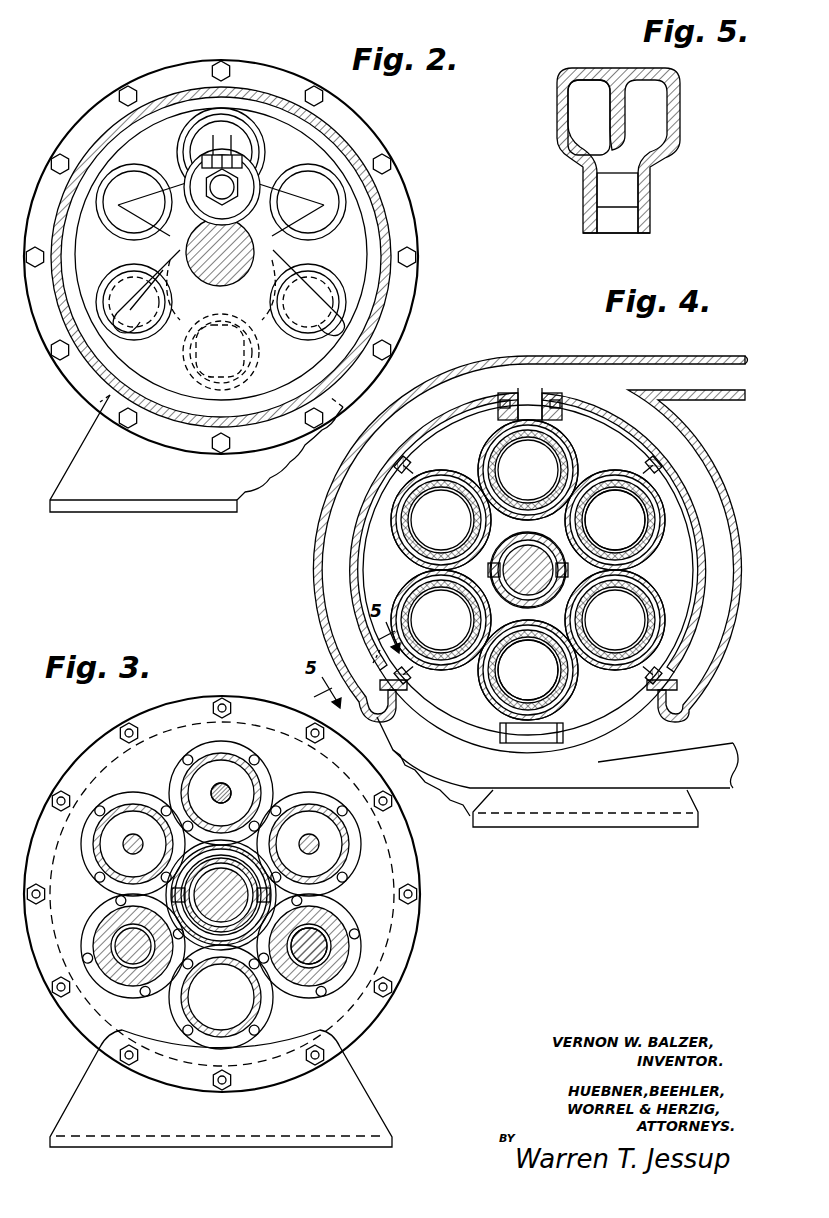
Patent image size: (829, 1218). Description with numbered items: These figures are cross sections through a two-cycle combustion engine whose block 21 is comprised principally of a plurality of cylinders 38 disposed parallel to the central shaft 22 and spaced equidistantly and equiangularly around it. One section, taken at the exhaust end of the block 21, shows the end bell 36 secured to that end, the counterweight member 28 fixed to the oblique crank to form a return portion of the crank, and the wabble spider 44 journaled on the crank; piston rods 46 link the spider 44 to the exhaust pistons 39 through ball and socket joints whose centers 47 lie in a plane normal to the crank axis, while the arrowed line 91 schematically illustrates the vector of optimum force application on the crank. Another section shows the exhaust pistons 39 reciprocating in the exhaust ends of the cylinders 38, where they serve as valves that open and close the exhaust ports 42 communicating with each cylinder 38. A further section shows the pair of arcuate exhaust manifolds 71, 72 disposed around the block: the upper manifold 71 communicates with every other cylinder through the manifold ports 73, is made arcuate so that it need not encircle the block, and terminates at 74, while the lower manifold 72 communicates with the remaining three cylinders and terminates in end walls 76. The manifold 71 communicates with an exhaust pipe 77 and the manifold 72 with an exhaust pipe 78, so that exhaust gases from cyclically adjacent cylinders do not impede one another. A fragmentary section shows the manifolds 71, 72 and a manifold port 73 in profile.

In FIG. 3, the block 21 is at (397, 813).
In FIG. 4, the shaft 22 is at (533, 553).
In FIG. 2, the counterweight member 28 is at (296, 382).
In FIG. 2, the end bell 36 is at (268, 102).
In FIG. 2, the cylinders 38 is at (187, 155).
In FIG. 4, the cylinders 38 is at (567, 457).
In FIG. 3, the cylinders 38 is at (253, 768).
In FIG. 3, the exhaust pistons 39 is at (332, 910).
In FIG. 4, the exhaust ports 42 is at (587, 502).
In FIG. 2, the wabble spider 44 is at (160, 260).
In FIG. 3, the piston rods 46 is at (220, 786).
In FIG. 3, the ball and socket joint centers 47 is at (307, 946).
In FIG. 5, the upper exhaust manifold 71 is at (573, 112).
In FIG. 4, the upper exhaust manifold 71 is at (325, 575).
In FIG. 5, the lower exhaust manifold 72 is at (589, 117).
In FIG. 4, the lower exhaust manifold 72 is at (530, 785).
In FIG. 5, the manifold ports 73 is at (617, 203).
In FIG. 4, the manifold ports 73 is at (527, 398).
In FIG. 4, the manifold termination 74 is at (400, 707).
In FIG. 4, the end walls 76 is at (382, 427).
In FIG. 4, the exhaust pipe 77 is at (723, 356).
In FIG. 4, the exhaust pipe 78 is at (723, 745).
In FIG. 2, the arrowed line 91 is at (262, 184).